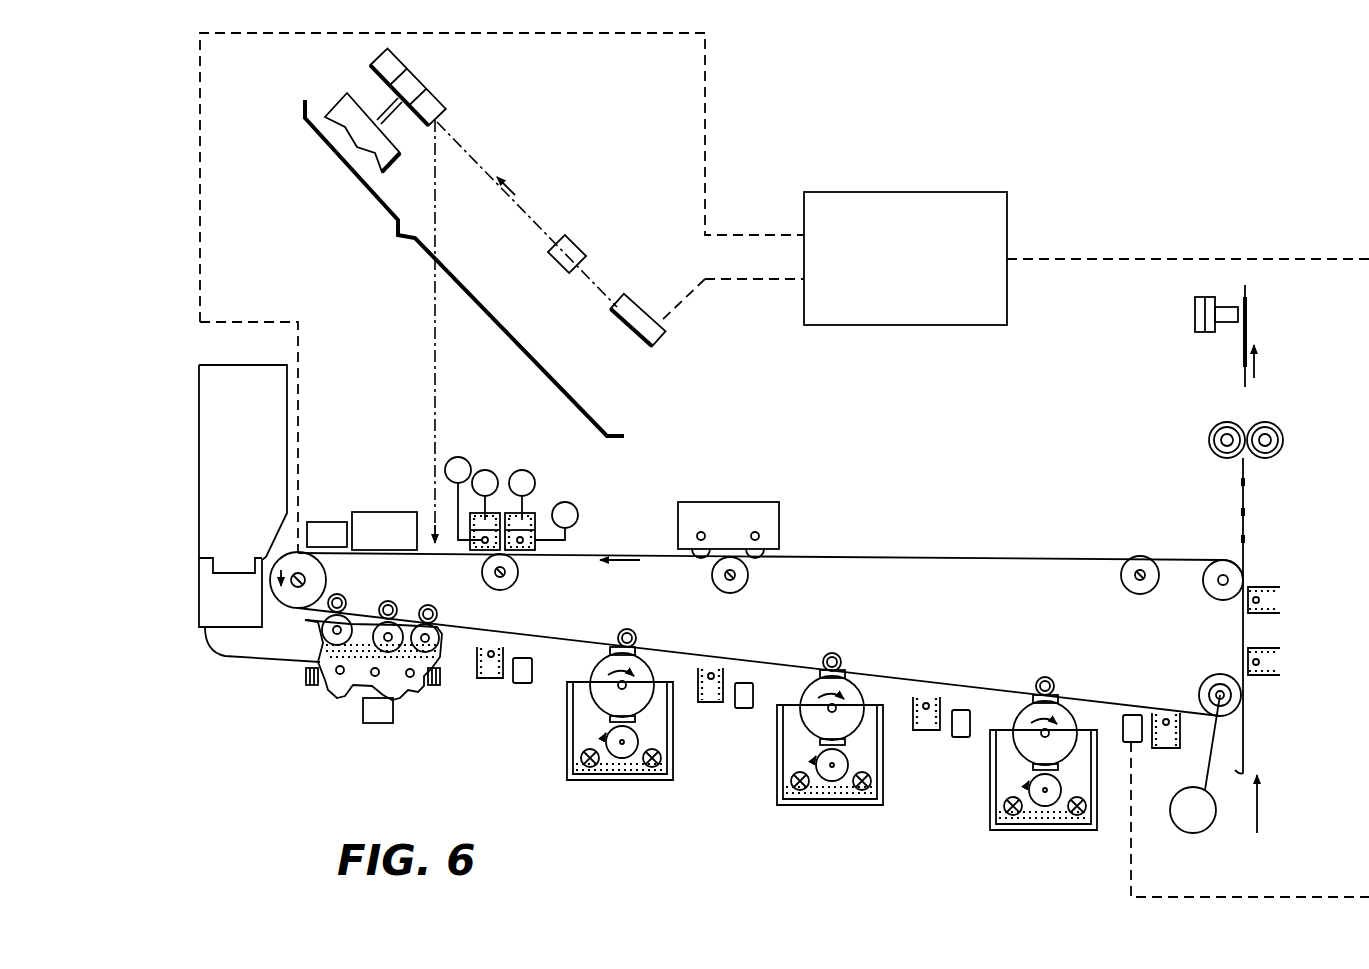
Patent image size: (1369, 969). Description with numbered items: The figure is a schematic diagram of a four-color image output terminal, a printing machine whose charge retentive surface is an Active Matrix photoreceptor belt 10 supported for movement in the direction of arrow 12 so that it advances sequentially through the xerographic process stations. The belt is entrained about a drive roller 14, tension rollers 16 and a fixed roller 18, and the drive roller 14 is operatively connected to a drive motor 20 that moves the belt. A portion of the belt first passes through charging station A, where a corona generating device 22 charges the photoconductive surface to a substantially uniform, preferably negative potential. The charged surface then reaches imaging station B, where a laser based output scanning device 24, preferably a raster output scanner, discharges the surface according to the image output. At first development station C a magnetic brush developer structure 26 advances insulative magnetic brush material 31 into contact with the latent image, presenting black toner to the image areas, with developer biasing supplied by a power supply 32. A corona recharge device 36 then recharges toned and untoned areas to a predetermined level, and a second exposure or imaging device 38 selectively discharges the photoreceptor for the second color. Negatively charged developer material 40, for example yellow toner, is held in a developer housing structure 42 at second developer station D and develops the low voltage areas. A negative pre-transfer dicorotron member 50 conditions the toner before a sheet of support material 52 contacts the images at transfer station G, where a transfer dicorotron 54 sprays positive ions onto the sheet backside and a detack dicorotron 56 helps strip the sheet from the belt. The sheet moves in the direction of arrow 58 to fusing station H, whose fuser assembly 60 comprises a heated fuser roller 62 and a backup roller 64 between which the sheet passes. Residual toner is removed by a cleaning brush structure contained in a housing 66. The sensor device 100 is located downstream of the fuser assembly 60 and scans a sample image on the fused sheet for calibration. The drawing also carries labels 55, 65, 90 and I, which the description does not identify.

The photoreceptor belt 10 is at (1092, 555).
The arrow 12 is at (622, 557).
The drive roller 14 is at (1237, 698).
The tension rollers 16 is at (290, 560).
The fixed roller 18 is at (1218, 570).
The drive motor 20 is at (1208, 826).
The corona generating device 22 is at (483, 450).
The laser based output scanning device 24 is at (392, 247).
The magnetic brush developer structure 26 is at (415, 699).
The insulative magnetic brush material 31 is at (357, 628).
The power supply 32 is at (393, 720).
The corona recharge device 36 is at (503, 655).
The second exposure or imaging device 38 is at (521, 683).
The developer material 40 is at (580, 755).
The developer housing structure 42 is at (620, 781).
The pre-transfer dicorotron member 50 is at (1163, 750).
The sheet of support material 52 is at (1248, 298).
The transfer dicorotron 54 is at (1282, 655).
The agitator 55 is at (790, 775).
The detack dicorotron 56 is at (1280, 590).
The arrow 58 is at (1254, 360).
The fuser assembly 60 is at (1224, 400).
The heated fuser roller 62 is at (1212, 442).
The backup or pressure roller 64 is at (1283, 442).
The agitator 65 is at (1004, 800).
The housing 66 is at (715, 508).
The controller 90 is at (913, 203).
The sensor device 100 is at (1180, 303).
The charging station A is at (529, 448).
The imaging station B is at (417, 470).
The first development station C is at (330, 712).
The second developer station D is at (572, 791).
The transfer station G is at (1322, 605).
The fusing station H is at (1280, 408).
The station I is at (753, 492).